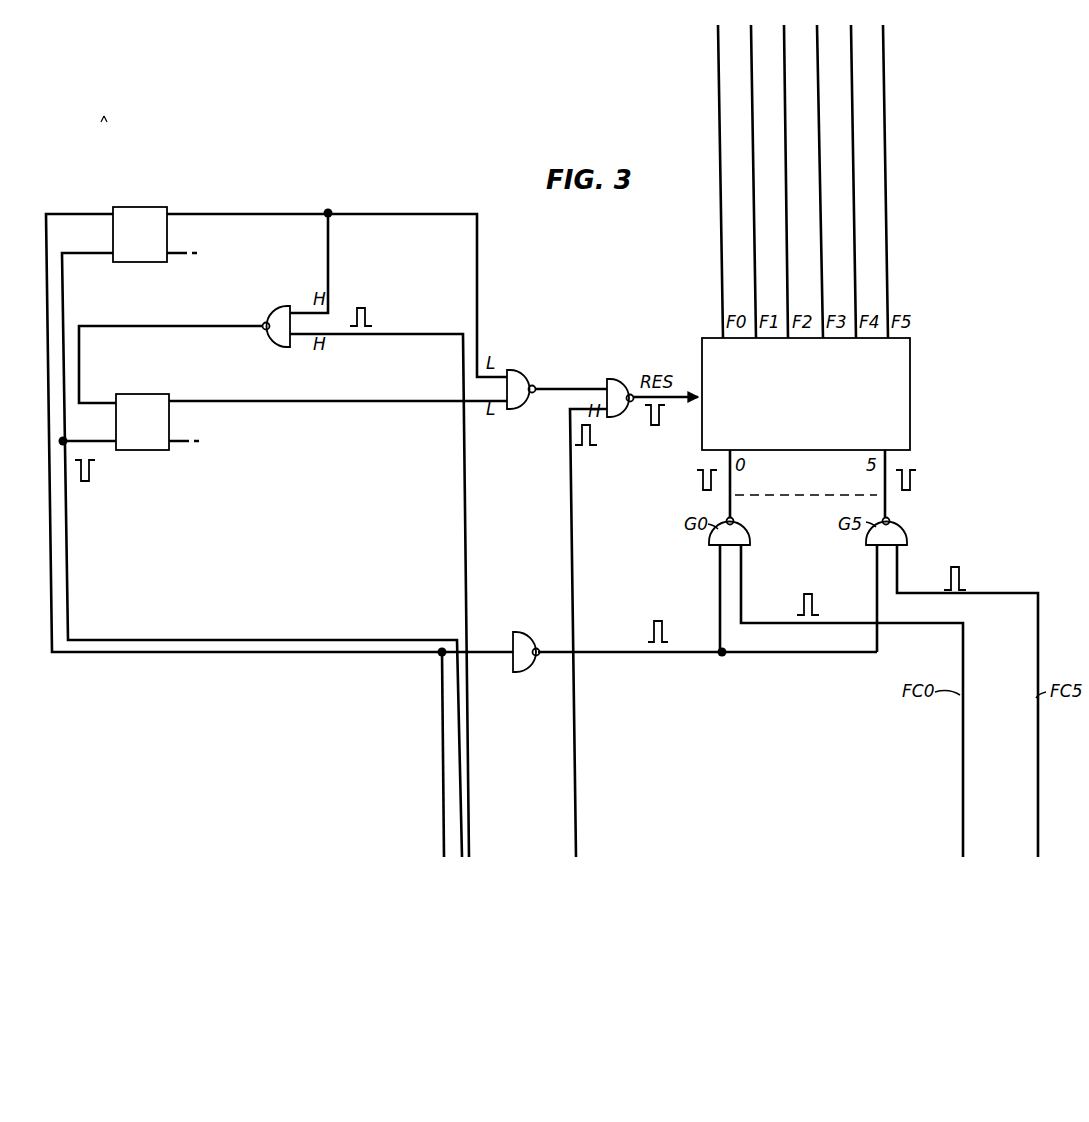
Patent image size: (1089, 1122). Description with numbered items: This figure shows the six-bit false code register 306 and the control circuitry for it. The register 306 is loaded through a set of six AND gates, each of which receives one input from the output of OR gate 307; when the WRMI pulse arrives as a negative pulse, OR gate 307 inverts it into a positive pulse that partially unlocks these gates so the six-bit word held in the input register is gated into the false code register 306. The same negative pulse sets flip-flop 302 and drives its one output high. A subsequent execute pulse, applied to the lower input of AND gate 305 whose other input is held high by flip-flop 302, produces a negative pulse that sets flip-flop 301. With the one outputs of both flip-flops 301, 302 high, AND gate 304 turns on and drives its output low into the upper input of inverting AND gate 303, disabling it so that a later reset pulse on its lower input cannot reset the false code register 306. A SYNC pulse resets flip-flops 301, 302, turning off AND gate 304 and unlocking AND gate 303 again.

The flip-flop 301 is at (141, 394).
The flip-flop 302 is at (138, 207).
The inverting AND gate 303 is at (612, 379).
The AND gate 304 is at (514, 370).
The AND gate 305 is at (274, 310).
The 6-bit false code register 306 is at (912, 387).
The OR gate 307 is at (519, 632).